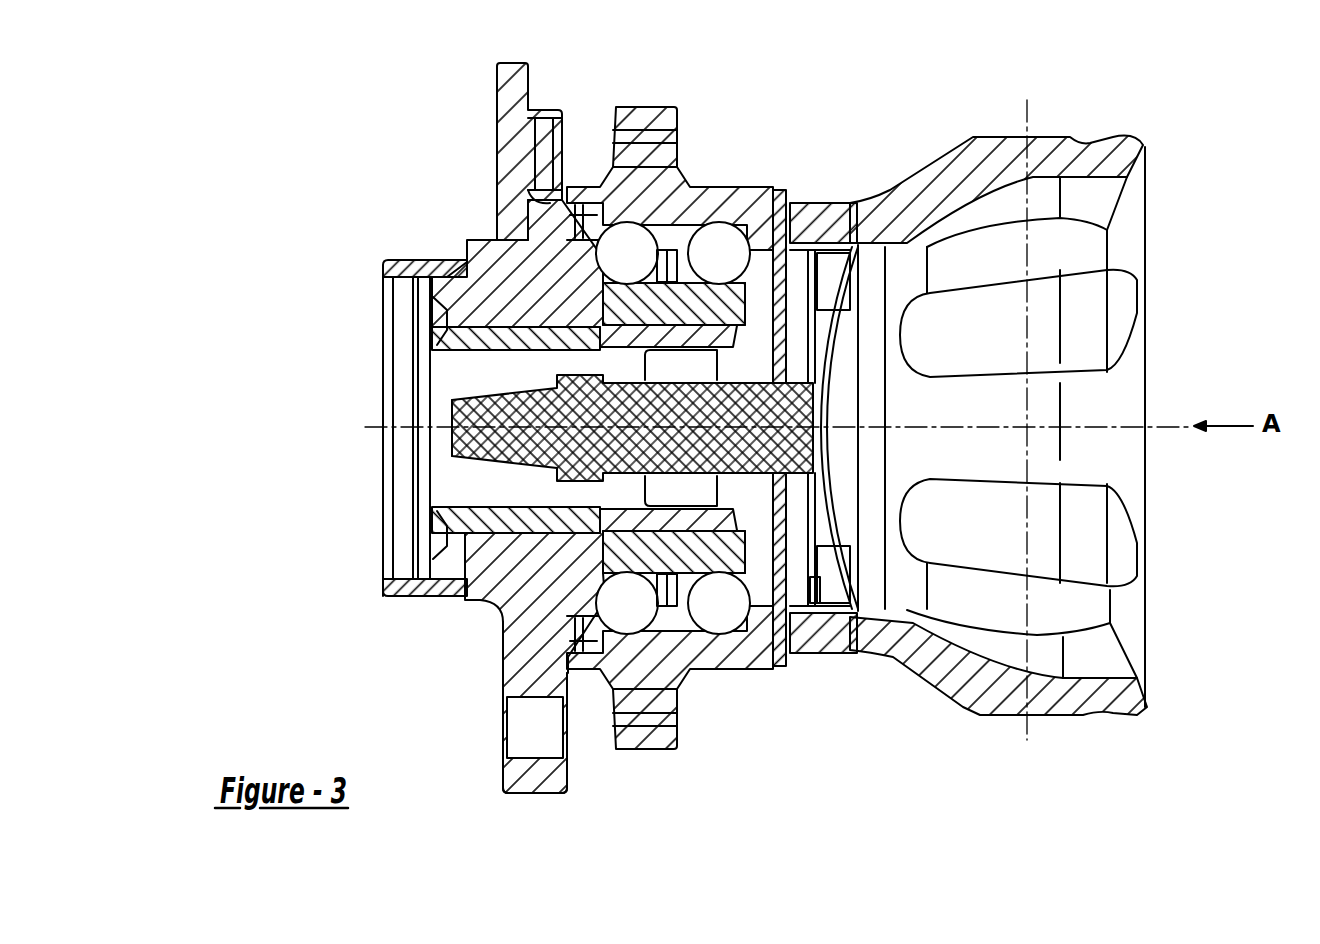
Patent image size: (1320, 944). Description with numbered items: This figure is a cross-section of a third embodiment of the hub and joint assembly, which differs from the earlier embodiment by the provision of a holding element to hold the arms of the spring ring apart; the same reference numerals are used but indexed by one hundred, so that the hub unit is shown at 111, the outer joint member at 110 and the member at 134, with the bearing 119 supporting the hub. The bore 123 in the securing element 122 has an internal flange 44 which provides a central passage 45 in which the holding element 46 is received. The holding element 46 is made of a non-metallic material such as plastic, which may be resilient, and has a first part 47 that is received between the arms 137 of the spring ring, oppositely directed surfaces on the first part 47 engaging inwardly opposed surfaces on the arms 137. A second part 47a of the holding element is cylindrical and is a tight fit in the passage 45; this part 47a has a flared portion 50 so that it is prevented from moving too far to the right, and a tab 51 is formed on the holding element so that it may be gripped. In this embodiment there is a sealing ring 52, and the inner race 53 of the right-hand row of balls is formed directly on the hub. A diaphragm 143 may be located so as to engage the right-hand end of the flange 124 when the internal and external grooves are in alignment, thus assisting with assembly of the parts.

The wheel hub 111 is at (583, 103).
The bearing 119 is at (643, 244).
The inner race 53 is at (737, 277).
The second part of the holding element 47a is at (717, 410).
The constant velocity joint outer housing 110 is at (996, 114).
The boot retaining ring 134 is at (832, 327).
The arms 137 is at (853, 367).
The diaphragm 143 is at (823, 478).
The internal flange 44 is at (620, 363).
The central passage 45 is at (640, 473).
The securing element 122 is at (508, 337).
The bore 123 is at (520, 378).
The tab 51 is at (455, 437).
The holding element 46 is at (495, 468).
The flared portion 50 is at (477, 612).
The flange 124 is at (765, 585).
The sealing ring 52 is at (778, 600).
The first part of the holding element 47 is at (795, 575).